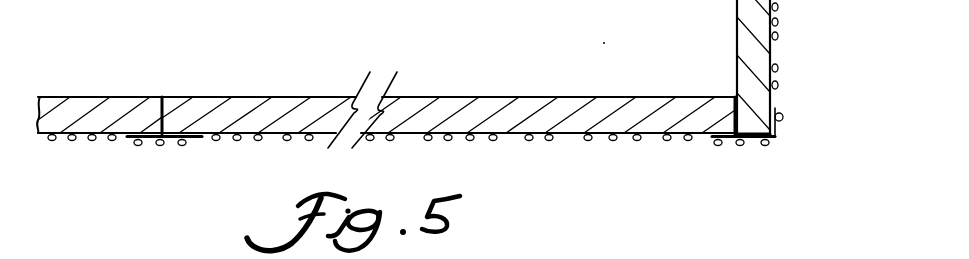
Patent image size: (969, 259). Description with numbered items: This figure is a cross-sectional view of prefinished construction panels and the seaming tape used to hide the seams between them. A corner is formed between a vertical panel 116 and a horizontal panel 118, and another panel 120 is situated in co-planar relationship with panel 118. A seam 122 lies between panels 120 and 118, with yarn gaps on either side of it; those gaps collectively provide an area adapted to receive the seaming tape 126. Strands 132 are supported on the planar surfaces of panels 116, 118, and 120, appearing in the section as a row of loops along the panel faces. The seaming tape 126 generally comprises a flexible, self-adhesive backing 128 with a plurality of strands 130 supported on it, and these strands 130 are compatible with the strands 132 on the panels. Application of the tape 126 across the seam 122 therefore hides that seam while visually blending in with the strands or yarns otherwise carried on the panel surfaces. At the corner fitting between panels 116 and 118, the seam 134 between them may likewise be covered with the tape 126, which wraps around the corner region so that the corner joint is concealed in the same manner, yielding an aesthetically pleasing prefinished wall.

The panel 116 is at (737, 52).
The panel 118 is at (250, 97).
The panel 120 is at (125, 98).
The seam 122 is at (162, 97).
The seaming tape 126 is at (752, 144).
The backing 128 is at (133, 141).
The strands 130 is at (138, 145).
The strands 132 is at (288, 141).
The seam 134 is at (736, 97).